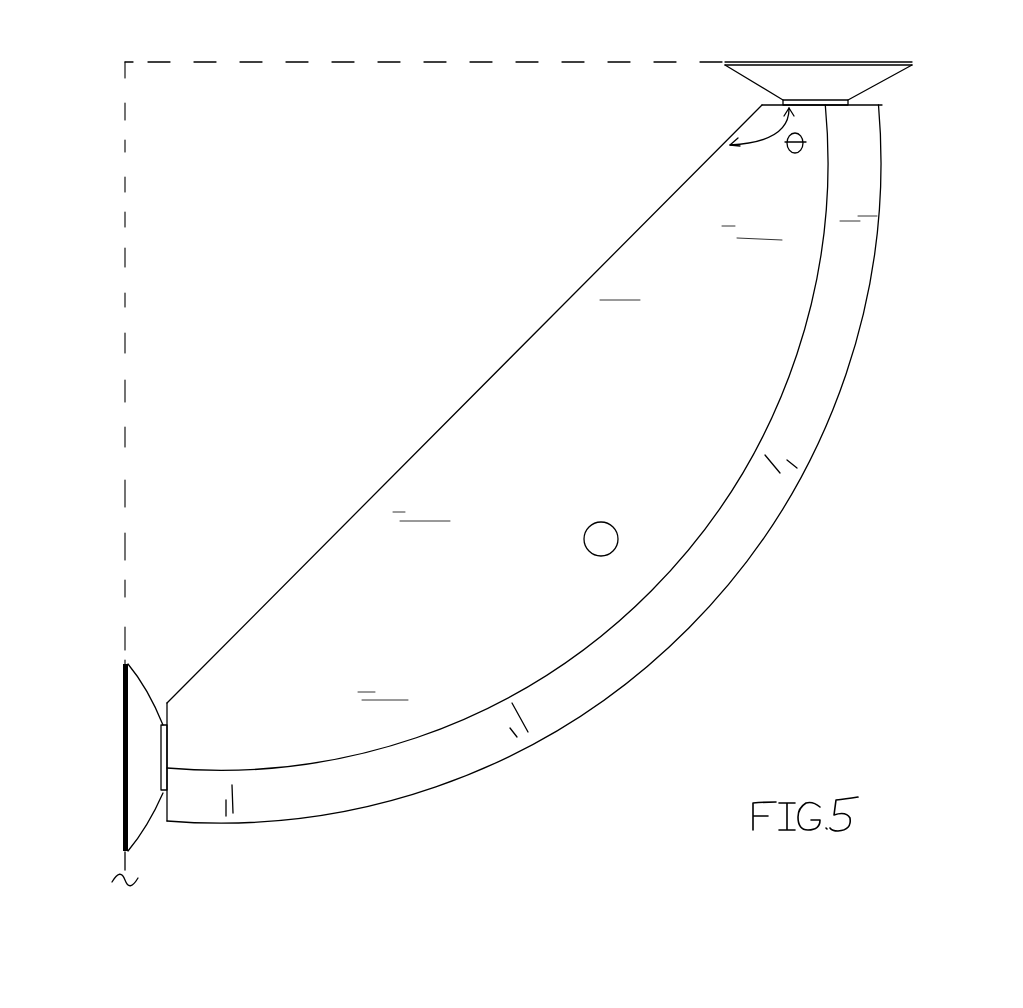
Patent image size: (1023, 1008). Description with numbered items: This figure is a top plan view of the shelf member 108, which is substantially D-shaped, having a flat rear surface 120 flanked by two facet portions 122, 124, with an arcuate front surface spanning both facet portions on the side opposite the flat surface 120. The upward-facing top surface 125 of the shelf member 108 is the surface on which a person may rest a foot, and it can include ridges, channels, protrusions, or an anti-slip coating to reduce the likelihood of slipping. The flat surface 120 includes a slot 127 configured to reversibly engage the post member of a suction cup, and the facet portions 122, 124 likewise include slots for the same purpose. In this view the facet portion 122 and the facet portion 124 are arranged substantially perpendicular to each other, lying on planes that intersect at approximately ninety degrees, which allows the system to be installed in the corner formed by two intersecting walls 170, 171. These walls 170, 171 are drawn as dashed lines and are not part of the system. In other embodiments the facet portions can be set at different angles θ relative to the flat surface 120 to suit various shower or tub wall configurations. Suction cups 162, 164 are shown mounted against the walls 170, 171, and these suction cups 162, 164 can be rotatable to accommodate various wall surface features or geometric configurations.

The shelf member 108 is at (579, 479).
The flat rear surface 120 is at (506, 364).
The facet portion 122 is at (186, 845).
The facet portion 124 is at (906, 112).
The top surface 125 is at (570, 463).
The slot 127 is at (622, 518).
The suction cup 162 is at (133, 724).
The suction cup 164 is at (934, 69).
The wall 170 is at (158, 346).
The wall 171 is at (285, 92).